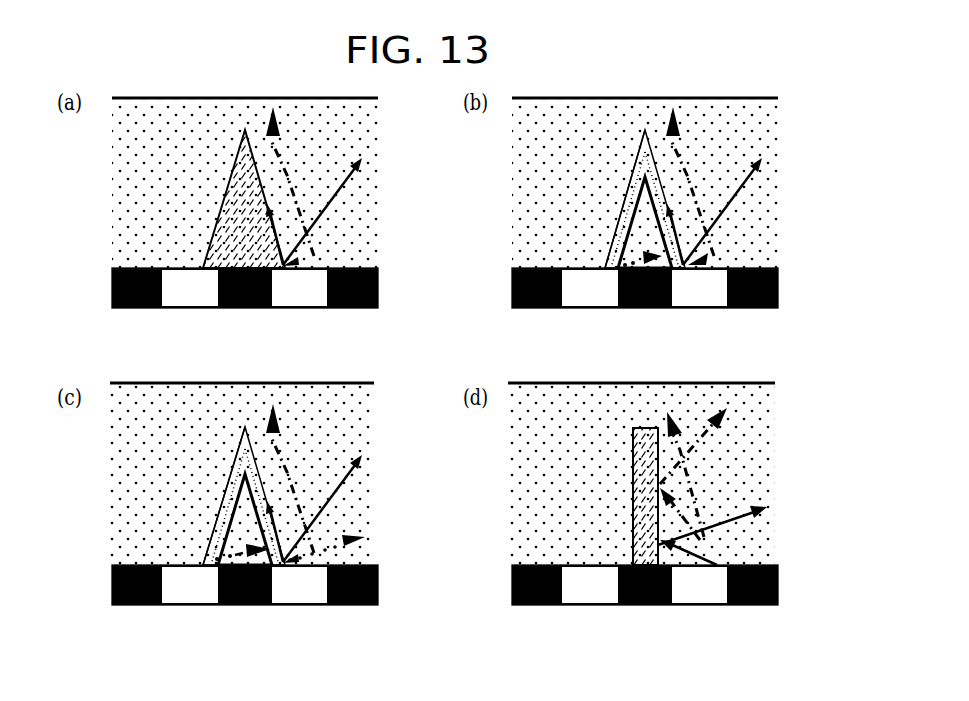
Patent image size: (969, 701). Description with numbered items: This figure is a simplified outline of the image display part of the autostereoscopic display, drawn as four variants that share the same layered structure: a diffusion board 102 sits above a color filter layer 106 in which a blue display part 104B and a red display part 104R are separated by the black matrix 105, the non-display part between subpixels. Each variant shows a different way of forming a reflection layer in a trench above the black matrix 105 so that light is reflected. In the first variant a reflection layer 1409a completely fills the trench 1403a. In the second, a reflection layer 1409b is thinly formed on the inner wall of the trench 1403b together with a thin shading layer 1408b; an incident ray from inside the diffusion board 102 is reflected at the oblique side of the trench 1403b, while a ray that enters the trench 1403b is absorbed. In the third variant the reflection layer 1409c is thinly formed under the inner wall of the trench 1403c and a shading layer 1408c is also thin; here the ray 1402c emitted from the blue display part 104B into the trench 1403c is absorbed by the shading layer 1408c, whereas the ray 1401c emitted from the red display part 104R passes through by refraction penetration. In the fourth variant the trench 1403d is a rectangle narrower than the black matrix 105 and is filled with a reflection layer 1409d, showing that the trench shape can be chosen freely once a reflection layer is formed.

The diffusion board 102 is at (103, 99).
The black matrix 105 is at (133, 308).
The blue display part 104B is at (192, 308).
The red display part 104R is at (299, 308).
The color filter layer 106 is at (103, 269).
The trench 1403a is at (221, 214).
The reflection layer 1409a is at (231, 181).
The trench 1403b is at (613, 246).
The shading layer 1408b is at (630, 190).
The reflection layer 1409b is at (636, 165).
The trench 1403c is at (210, 540).
The shading layer 1408c is at (228, 488).
The reflection layer 1409c is at (236, 462).
The ray 1402c is at (205, 558).
The ray 1401c is at (331, 551).
The trench 1403d is at (633, 500).
The light absorbing portion 1409d is at (633, 472).